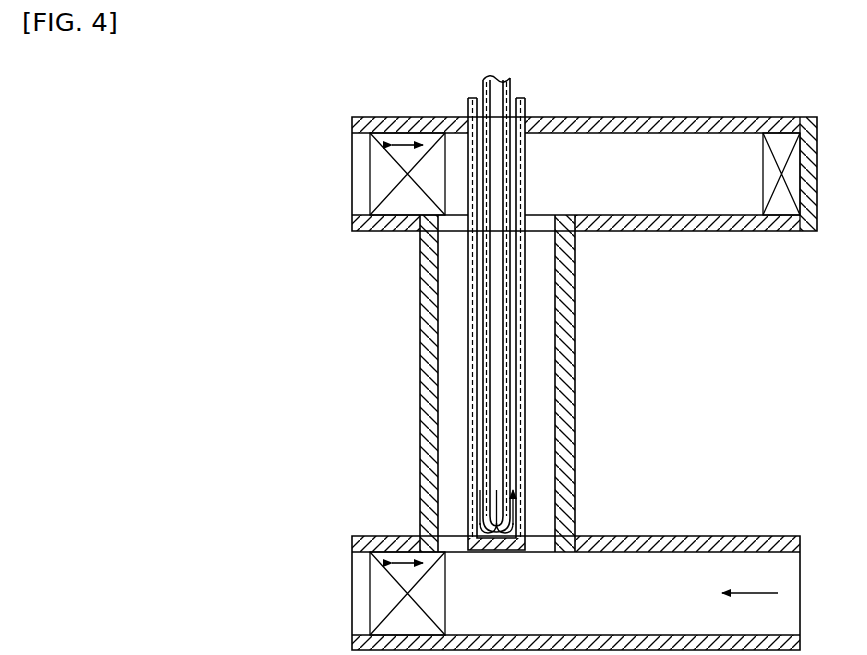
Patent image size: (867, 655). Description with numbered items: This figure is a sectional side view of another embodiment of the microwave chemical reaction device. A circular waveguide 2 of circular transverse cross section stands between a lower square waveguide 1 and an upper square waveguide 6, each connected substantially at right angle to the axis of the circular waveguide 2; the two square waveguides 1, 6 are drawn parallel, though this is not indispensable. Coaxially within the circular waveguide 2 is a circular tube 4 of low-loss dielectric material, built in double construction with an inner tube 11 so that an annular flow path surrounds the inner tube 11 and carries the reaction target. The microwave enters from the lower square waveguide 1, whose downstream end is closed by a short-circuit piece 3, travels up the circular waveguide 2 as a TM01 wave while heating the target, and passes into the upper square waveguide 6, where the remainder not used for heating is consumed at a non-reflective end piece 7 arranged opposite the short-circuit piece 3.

The square waveguide 1 is at (724, 536).
The circular waveguide 2 is at (420, 393).
The short-circuit piece 3 is at (388, 181).
The circular tube 4 is at (525, 323).
The square waveguide 6 is at (632, 117).
The non-reflective end piece 7 is at (782, 150).
The inner tube 11 is at (495, 102).